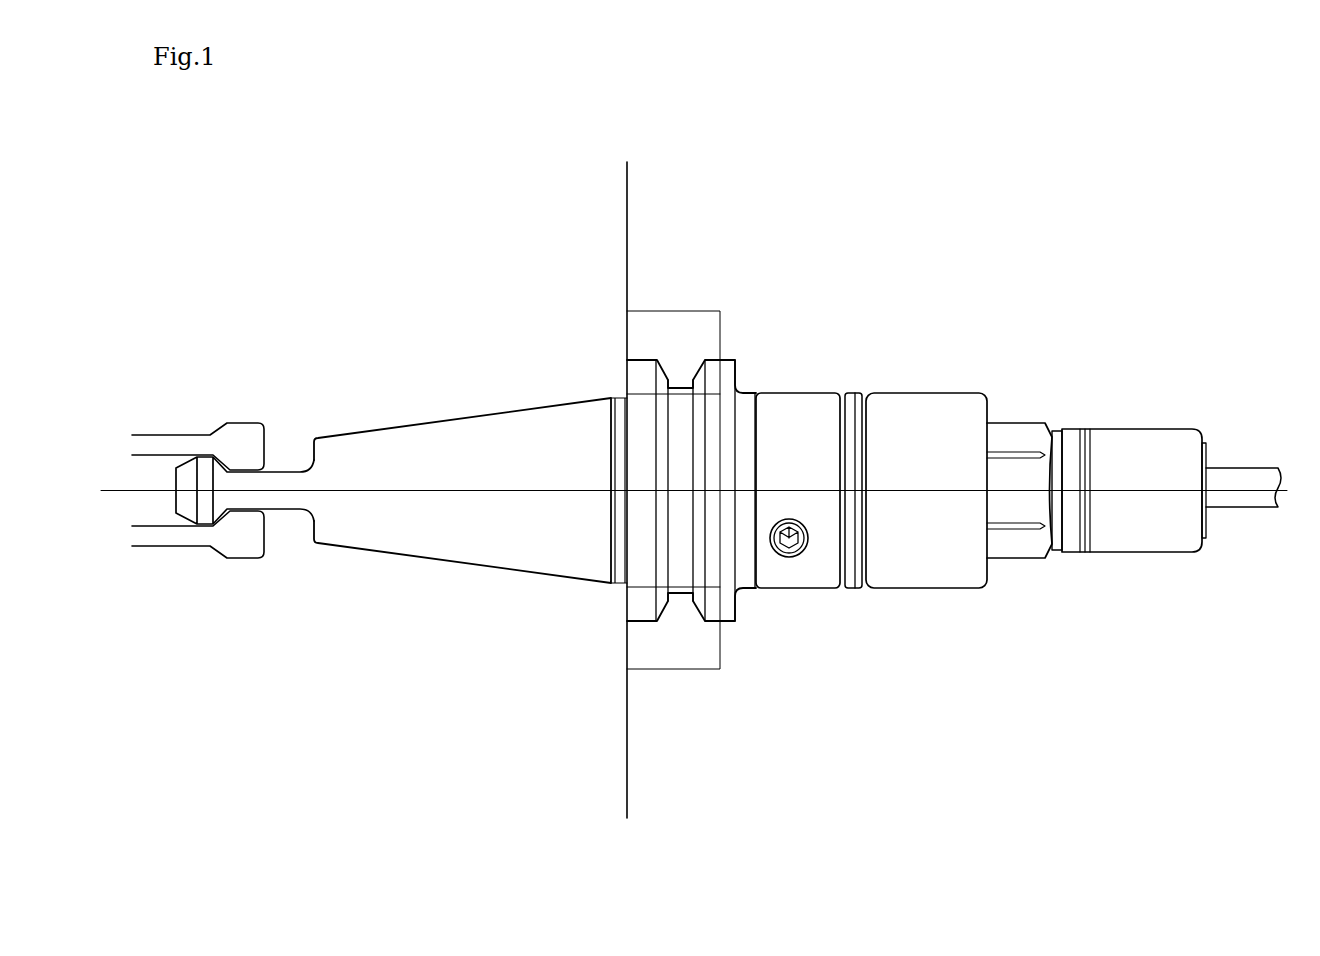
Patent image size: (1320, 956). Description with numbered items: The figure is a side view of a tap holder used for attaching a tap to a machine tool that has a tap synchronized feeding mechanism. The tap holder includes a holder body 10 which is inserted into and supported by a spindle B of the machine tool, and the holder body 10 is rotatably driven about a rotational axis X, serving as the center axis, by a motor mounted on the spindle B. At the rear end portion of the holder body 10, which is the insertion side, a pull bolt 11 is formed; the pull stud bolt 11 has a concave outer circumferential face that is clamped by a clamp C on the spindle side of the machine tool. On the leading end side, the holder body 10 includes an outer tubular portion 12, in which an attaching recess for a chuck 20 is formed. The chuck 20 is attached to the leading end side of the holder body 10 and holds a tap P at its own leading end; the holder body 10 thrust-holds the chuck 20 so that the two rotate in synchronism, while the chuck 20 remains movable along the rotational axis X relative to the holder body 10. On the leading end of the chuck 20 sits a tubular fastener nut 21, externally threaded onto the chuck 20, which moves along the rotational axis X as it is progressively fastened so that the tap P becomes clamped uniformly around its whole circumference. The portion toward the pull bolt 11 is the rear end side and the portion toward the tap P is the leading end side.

The holder body 10 is at (480, 414).
The pull bolt 11 is at (282, 512).
The outer tubular portion 12 is at (947, 581).
The chuck 20 is at (1141, 428).
The fastener nut 21 is at (1157, 542).
The spindle B is at (627, 188).
The clamp C is at (233, 423).
The rotational axis X is at (120, 494).
The tap P is at (1268, 466).